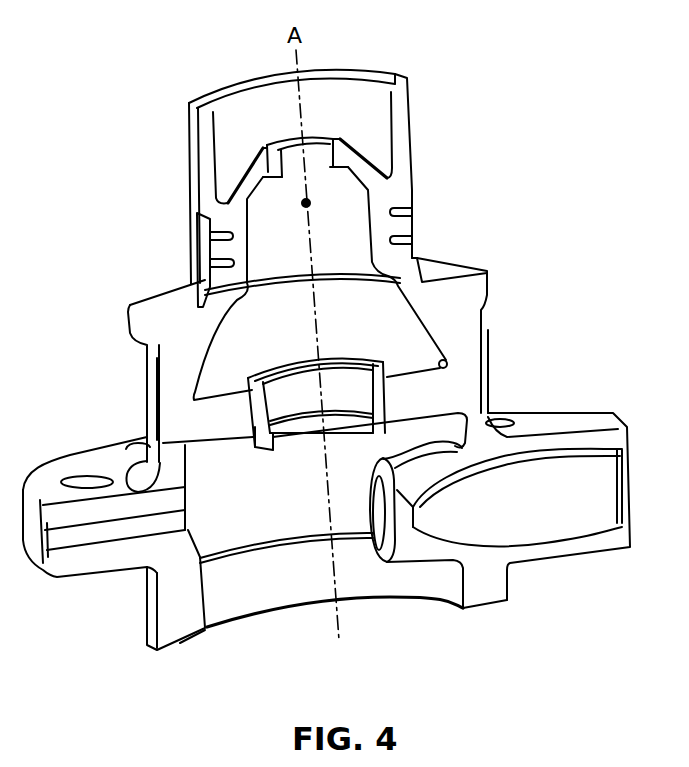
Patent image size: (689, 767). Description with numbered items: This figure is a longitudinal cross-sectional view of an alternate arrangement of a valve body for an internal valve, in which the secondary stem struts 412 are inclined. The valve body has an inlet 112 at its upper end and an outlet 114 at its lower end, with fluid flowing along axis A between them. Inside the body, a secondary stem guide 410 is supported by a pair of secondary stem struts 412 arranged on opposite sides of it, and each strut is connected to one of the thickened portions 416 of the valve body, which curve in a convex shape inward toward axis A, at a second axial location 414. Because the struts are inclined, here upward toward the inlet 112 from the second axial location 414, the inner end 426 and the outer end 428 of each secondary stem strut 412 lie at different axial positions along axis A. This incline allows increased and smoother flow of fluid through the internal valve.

The inlet 112 is at (232, 90).
The outlet 114 is at (463, 608).
The secondary stem guide 410 is at (317, 147).
The secondary stem struts 412 is at (363, 173).
The second axial location 414 is at (303, 206).
The thickened portions 416 is at (383, 254).
The inner end 426 is at (265, 162).
The outer end 428 is at (249, 203).